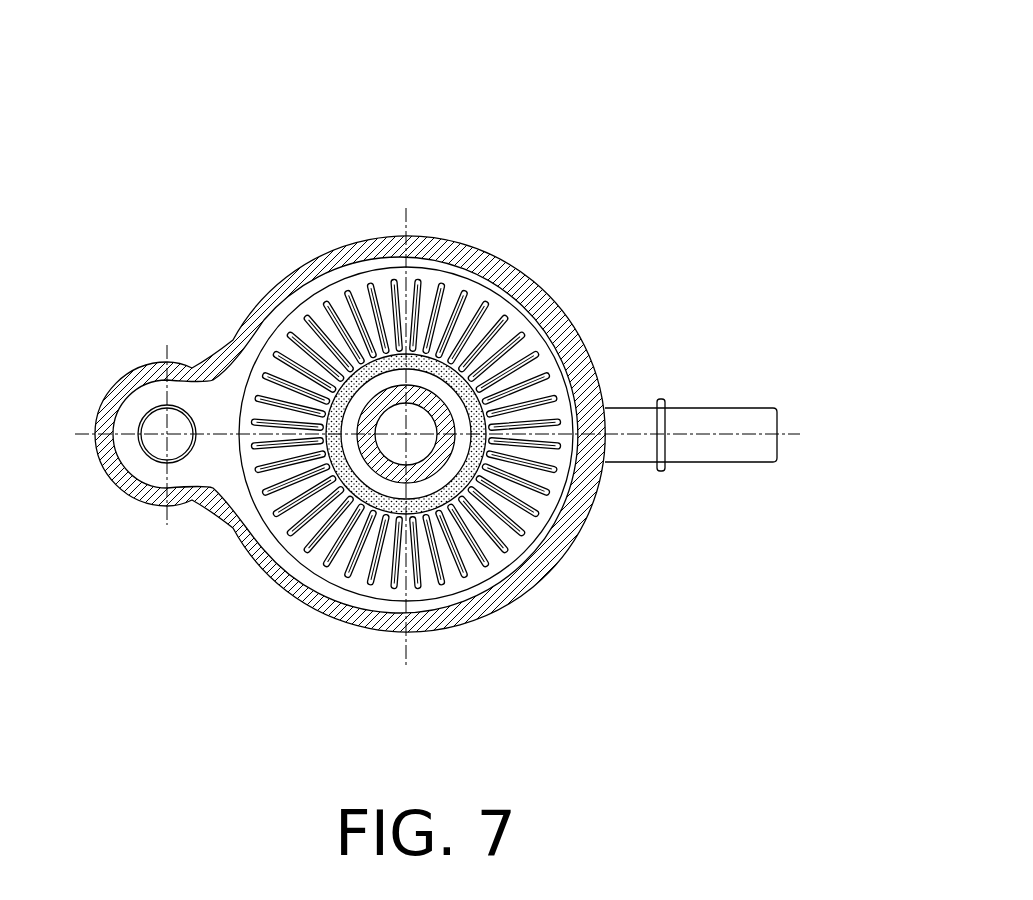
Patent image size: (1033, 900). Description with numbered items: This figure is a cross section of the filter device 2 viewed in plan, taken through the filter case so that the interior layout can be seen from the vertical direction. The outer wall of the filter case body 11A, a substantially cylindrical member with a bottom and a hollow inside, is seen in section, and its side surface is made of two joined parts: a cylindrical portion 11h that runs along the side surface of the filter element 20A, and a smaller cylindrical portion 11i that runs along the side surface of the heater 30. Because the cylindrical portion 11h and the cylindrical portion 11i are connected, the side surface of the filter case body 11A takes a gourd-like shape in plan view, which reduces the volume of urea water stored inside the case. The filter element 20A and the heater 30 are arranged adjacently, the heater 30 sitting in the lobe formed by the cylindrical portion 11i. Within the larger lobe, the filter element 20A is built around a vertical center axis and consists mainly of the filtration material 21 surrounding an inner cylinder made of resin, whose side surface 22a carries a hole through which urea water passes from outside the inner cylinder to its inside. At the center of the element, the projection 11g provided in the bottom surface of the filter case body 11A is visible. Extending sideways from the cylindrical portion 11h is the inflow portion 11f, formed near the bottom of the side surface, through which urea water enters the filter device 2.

The filter device 2 is at (688, 54).
The filter case body 11A is at (609, 404).
The inflow portion 11f is at (697, 452).
The projection 11g is at (437, 455).
The cylindrical portion 11h is at (285, 578).
The cylindrical portion 11i is at (155, 503).
The filter element 20A is at (467, 588).
The filtration material 21 is at (297, 332).
The side surface 22a is at (372, 364).
The heater 30 is at (155, 445).